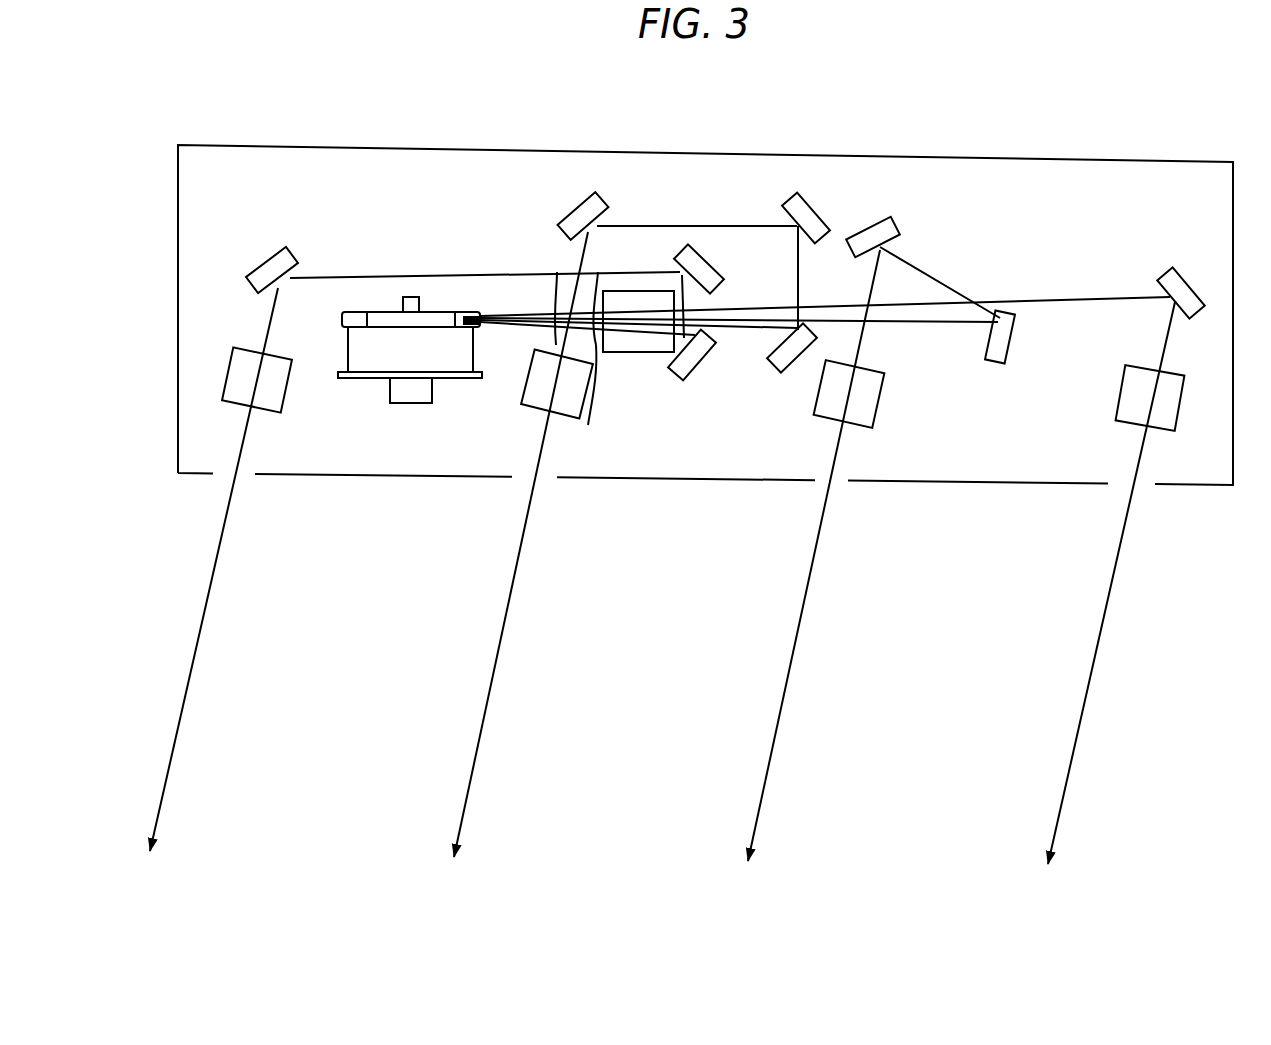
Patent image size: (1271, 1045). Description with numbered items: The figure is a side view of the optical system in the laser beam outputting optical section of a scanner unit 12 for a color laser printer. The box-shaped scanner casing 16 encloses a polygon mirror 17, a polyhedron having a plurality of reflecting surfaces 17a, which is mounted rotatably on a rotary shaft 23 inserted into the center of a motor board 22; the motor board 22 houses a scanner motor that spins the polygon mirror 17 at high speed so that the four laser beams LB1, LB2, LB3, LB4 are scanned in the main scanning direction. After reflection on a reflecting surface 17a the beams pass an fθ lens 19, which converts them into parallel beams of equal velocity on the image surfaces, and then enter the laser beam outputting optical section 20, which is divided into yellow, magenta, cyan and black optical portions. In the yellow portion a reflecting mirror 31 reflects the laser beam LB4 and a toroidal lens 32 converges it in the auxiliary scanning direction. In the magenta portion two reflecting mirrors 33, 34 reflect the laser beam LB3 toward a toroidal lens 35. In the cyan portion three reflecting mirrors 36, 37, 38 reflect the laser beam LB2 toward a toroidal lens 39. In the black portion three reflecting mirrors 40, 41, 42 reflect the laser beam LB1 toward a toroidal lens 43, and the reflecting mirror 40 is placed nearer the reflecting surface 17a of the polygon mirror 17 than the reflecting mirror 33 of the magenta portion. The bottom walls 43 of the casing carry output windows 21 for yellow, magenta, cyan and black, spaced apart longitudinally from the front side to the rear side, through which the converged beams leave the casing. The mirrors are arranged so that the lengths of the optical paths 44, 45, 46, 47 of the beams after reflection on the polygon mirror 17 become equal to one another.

The scanner unit 12 is at (712, 152).
The scanner casing 16 is at (207, 145).
The polygon mirror 17 is at (387, 300).
The reflecting surface 17a is at (457, 313).
The fθ lens 19 is at (634, 354).
The laser beam outputting optical section 20 is at (442, 263).
The output window 21 is at (255, 474).
The motor board 22 is at (455, 376).
The rotary shaft 23 is at (412, 297).
The reflecting mirror 31 is at (1193, 280).
The toroidal lens 32 is at (1185, 400).
The reflecting mirror 33 is at (1012, 340).
The reflecting mirror 34 is at (866, 228).
The toroidal lens 35 is at (885, 402).
The reflecting mirror 36 is at (792, 378).
The reflecting mirror 37 is at (822, 207).
The reflecting mirror 38 is at (569, 205).
The toroidal lens 39 is at (565, 418).
The reflecting mirror 40 is at (698, 365).
The reflecting mirror 41 is at (713, 257).
The reflecting mirror 42 is at (264, 266).
The toroidal lens 43 is at (228, 375).
The optical path 44 is at (555, 294).
The optical path 45 is at (601, 294).
The optical path 46 is at (612, 325).
The optical path 47 is at (590, 402).
The laser beam LB1 is at (1020, 300).
The laser beam LB2 is at (957, 324).
The laser beam LB3 is at (745, 330).
The laser beam LB4 is at (503, 326).